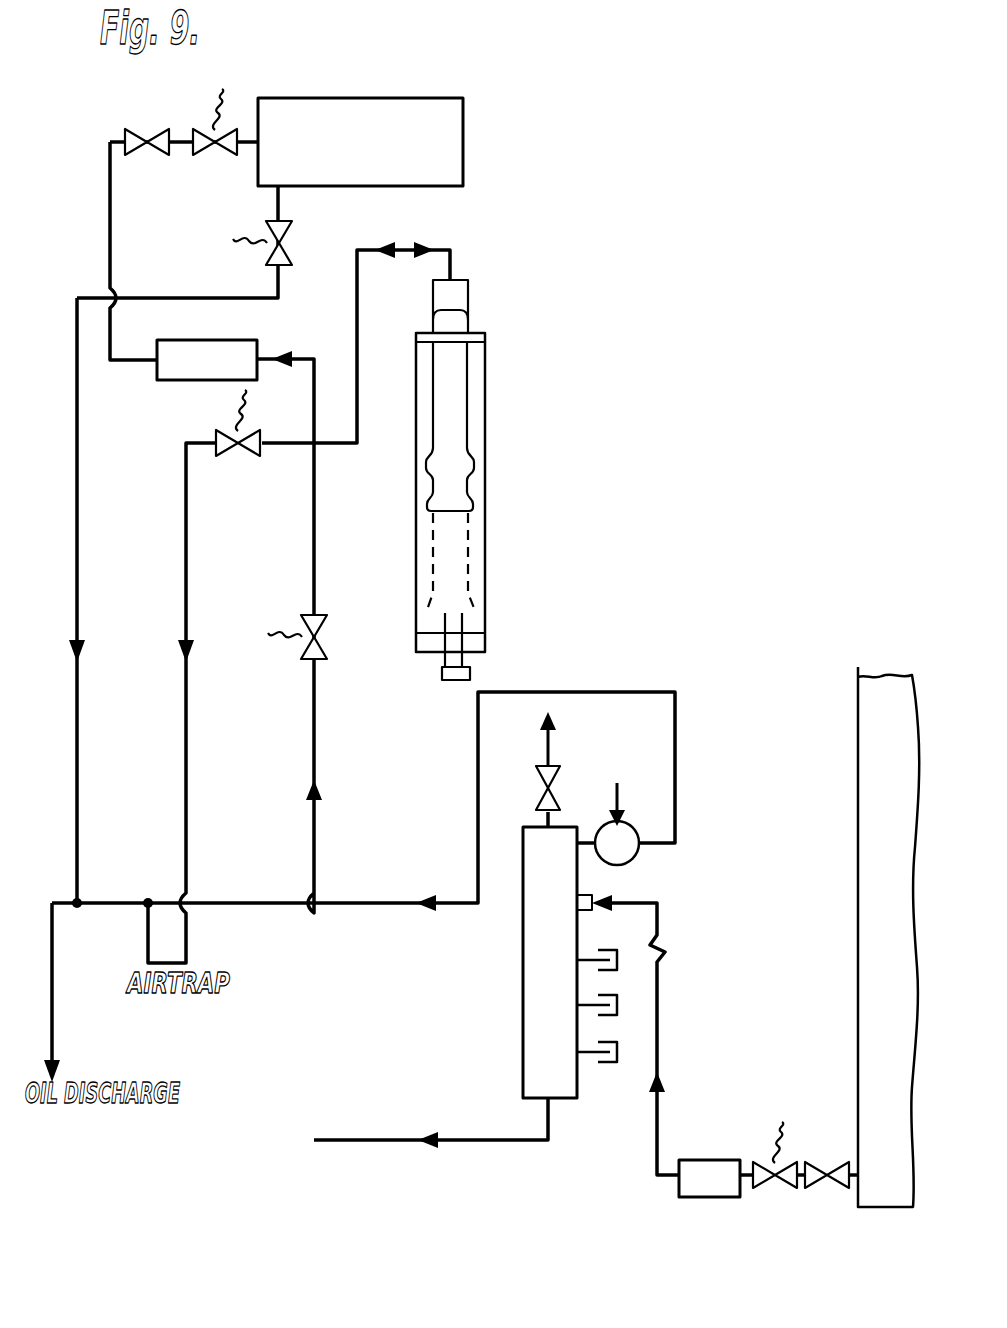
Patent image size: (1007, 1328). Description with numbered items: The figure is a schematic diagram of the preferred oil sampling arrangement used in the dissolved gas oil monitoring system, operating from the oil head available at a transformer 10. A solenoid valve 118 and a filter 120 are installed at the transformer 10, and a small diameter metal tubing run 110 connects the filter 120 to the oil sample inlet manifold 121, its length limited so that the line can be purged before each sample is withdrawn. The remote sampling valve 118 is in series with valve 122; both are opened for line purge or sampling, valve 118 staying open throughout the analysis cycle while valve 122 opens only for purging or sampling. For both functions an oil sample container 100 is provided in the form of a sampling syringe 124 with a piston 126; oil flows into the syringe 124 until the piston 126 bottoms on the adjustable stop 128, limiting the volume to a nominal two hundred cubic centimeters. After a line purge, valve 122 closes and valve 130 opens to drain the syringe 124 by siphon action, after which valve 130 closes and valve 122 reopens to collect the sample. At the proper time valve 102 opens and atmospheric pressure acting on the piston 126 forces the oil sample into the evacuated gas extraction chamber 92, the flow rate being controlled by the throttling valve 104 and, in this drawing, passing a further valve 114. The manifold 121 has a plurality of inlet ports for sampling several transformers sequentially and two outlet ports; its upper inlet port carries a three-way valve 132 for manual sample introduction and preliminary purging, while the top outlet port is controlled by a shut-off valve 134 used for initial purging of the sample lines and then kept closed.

The transformer 10 is at (846, 672).
The gas extraction chamber 92 is at (463, 148).
The oil sample container 100 is at (509, 476).
The valve 102 is at (215, 156).
The throttling valve 104 is at (150, 156).
The metal tubing run 110 is at (660, 1000).
The valve 114 is at (292, 245).
The solenoid valve 118 is at (785, 1160).
The filter 120 is at (703, 1172).
The oil sample inlet manifold 121 is at (523, 1048).
The valve 122 is at (327, 639).
The sampling syringe 124 is at (486, 411).
The piston 126 is at (460, 478).
The adjustable stop 128 is at (467, 626).
The valve 130 is at (240, 458).
The three-way valve 132 is at (640, 860).
The shut-off valve 134 is at (537, 791).